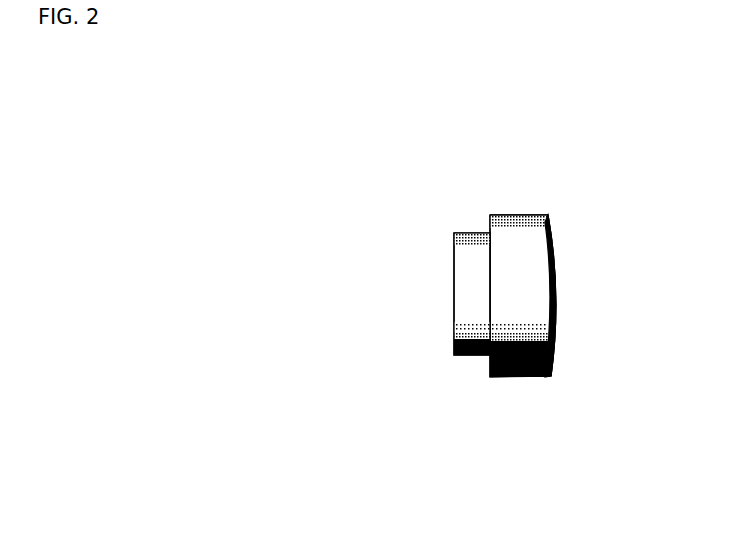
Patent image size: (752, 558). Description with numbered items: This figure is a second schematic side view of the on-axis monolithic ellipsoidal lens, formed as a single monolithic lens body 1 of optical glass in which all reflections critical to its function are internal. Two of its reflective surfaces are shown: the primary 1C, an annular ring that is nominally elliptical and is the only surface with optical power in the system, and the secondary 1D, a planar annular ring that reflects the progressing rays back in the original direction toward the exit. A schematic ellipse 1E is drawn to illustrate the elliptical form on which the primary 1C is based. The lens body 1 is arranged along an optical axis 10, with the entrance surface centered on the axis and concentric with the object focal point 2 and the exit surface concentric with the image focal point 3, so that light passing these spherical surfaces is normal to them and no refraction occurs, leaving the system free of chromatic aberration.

The monolithic lens body 1 is at (490, 213).
The primary 1C is at (552, 348).
The secondary 1D is at (453, 353).
The schematic ellipse 1E is at (495, 448).
The object focal point 2 is at (420, 295).
The image focal point 3 is at (710, 290).
The optical axis 10 is at (600, 295).